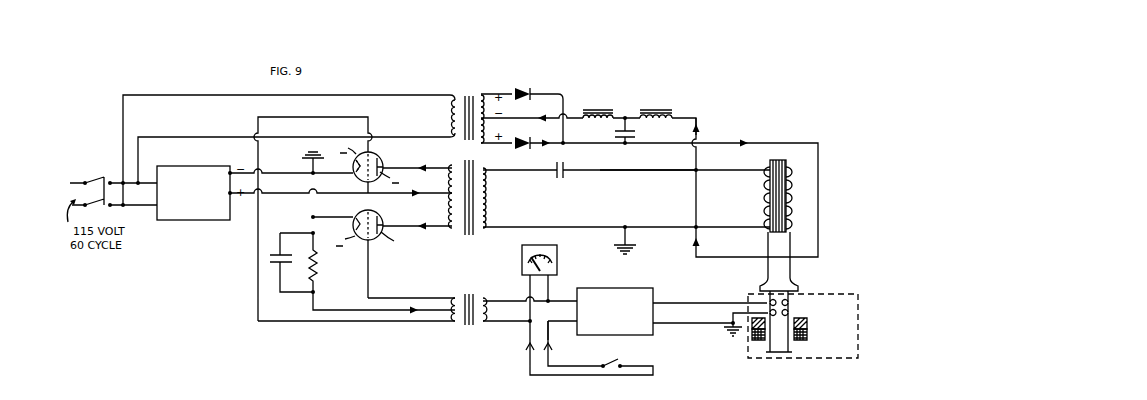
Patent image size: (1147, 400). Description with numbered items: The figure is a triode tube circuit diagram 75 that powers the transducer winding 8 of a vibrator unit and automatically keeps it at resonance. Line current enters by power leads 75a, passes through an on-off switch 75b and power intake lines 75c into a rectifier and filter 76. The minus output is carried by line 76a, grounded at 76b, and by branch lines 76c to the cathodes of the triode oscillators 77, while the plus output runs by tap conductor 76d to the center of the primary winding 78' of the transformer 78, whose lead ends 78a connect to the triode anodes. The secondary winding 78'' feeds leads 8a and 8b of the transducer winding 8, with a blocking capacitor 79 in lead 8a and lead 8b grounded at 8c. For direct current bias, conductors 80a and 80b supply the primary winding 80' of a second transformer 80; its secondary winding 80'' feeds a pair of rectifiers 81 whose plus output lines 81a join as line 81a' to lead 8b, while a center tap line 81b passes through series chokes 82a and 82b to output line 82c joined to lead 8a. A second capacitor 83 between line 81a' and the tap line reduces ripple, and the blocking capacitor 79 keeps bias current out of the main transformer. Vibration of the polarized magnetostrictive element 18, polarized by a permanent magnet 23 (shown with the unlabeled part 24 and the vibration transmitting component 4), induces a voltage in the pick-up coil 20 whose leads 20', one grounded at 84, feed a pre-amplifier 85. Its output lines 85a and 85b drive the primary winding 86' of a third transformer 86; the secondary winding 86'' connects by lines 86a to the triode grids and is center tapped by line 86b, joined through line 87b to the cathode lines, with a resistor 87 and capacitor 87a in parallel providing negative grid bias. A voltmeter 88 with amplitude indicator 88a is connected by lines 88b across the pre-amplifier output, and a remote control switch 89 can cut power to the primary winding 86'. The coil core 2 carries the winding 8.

The circuit diagram 75 is at (771, 95).
The power leads 75a is at (71, 181).
The on-off switch 75b is at (103, 175).
The power intake lines 75c is at (143, 200).
The rectifier and filter 76 is at (188, 168).
The line 76a is at (285, 173).
The ground 76b is at (306, 155).
The branch lines 76c is at (327, 217).
The tap conductor 76d is at (281, 197).
The triode oscillators 77 is at (384, 157).
The transformer 78 is at (474, 194).
The primary winding 78' is at (439, 196).
The secondary winding 78'' is at (501, 198).
The lead ends 78a is at (441, 158).
The blocking capacitor 79 is at (566, 177).
The second transformer 80 is at (471, 105).
The primary winding 80' is at (437, 117).
The secondary winding 80'' is at (497, 102).
The conductor 80a is at (179, 96).
The conductor 80b is at (179, 137).
The rectifiers 81 is at (522, 90).
The plus DC output lines 81a is at (531, 121).
The continuation output line 81a' is at (666, 187).
The plus direct current line 81b is at (509, 118).
The first choke 82a is at (590, 108).
The second choke 82b is at (666, 108).
The output line 82c is at (698, 134).
The second capacitor 83 is at (640, 138).
The ground 84 is at (727, 343).
The pre-amplifier 85 is at (641, 287).
The pre-amplifier output line 85a is at (561, 299).
The pre-amplifier output line 85b is at (559, 328).
The third transformer 86 is at (467, 328).
The primary winding 86' is at (496, 330).
The secondary winding 86'' is at (441, 323).
The lines 86a is at (297, 117).
The center tap line 86b is at (331, 308).
The resistor 87 is at (321, 266).
The capacitor 87a is at (271, 266).
The line 87b is at (308, 233).
The voltmeter 88 is at (521, 258).
The amplitude indicator 88a is at (557, 247).
The lines 88b is at (530, 288).
The remote control switch 89 is at (621, 365).
The coil core 2 is at (788, 163).
The vibration transmitting component 4 is at (788, 272).
The transducer winding 8 is at (792, 197).
The transducer winding lead 8a is at (624, 171).
The transducer winding lead 8b is at (650, 227).
The ground 8c is at (637, 250).
The magnetostrictive element 18 is at (790, 350).
The pick-up coil 20 is at (801, 307).
The pick-up leads 20' is at (710, 311).
The permanent magnet 23 is at (810, 337).
The magnet 24 is at (809, 318).